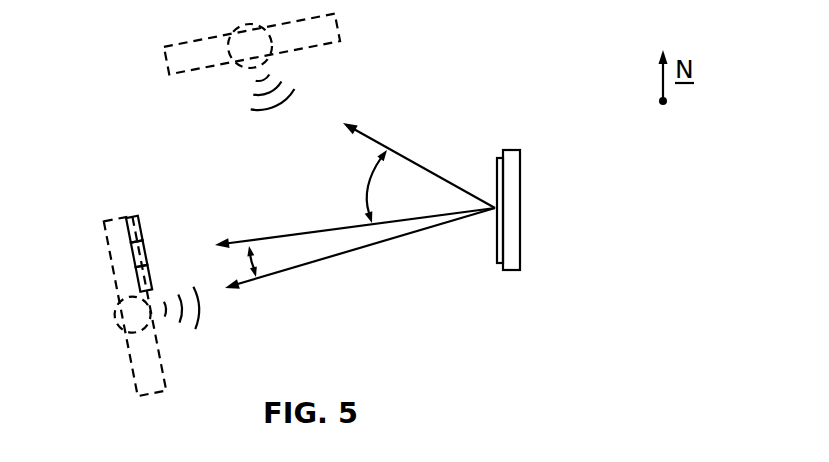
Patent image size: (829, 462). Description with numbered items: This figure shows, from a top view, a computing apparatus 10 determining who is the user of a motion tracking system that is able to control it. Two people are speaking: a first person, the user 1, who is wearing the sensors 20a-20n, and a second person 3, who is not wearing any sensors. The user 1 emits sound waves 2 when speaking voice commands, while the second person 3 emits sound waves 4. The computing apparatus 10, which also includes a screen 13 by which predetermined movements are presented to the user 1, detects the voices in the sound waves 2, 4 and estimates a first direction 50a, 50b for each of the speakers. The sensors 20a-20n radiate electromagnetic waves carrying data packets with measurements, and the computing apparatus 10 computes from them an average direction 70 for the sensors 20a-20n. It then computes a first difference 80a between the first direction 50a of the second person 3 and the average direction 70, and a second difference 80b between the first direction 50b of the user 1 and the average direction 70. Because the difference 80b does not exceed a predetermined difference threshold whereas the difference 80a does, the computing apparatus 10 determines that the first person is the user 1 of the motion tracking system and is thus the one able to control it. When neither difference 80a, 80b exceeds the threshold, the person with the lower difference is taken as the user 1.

The user 1 is at (137, 311).
The sound waves 2 is at (197, 341).
The person 3 is at (337, 22).
The sound waves 4 is at (226, 97).
The computing apparatus 10 is at (512, 212).
The screen 13 is at (498, 180).
The sensors 20a-20n is at (157, 226).
The first direction 50a is at (398, 118).
The first direction 50b is at (272, 327).
The average direction 70 is at (231, 230).
The first difference 80a is at (362, 195).
The second difference 80b is at (273, 257).